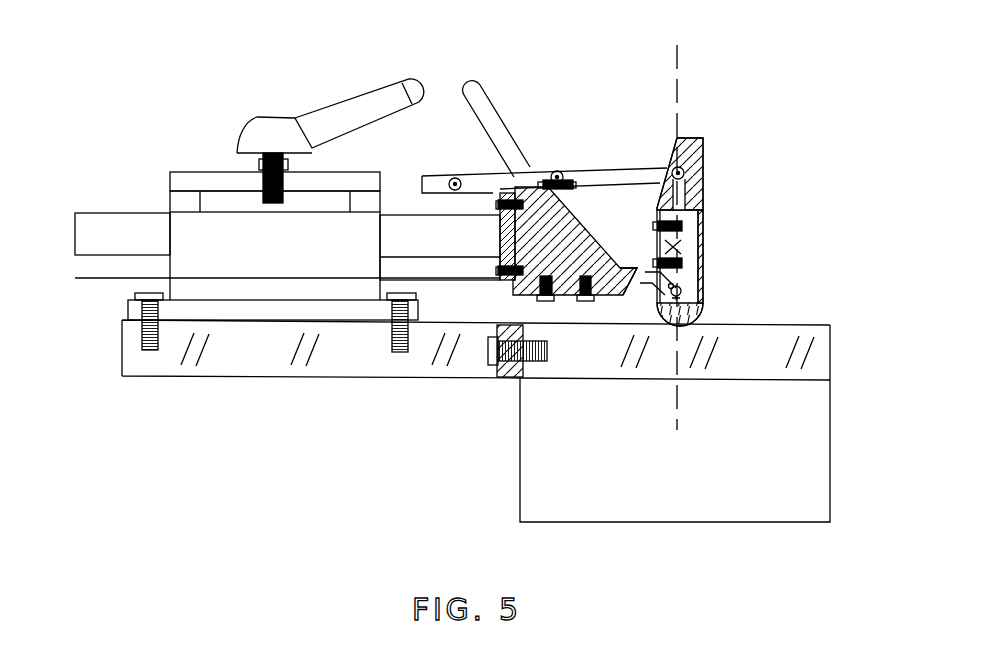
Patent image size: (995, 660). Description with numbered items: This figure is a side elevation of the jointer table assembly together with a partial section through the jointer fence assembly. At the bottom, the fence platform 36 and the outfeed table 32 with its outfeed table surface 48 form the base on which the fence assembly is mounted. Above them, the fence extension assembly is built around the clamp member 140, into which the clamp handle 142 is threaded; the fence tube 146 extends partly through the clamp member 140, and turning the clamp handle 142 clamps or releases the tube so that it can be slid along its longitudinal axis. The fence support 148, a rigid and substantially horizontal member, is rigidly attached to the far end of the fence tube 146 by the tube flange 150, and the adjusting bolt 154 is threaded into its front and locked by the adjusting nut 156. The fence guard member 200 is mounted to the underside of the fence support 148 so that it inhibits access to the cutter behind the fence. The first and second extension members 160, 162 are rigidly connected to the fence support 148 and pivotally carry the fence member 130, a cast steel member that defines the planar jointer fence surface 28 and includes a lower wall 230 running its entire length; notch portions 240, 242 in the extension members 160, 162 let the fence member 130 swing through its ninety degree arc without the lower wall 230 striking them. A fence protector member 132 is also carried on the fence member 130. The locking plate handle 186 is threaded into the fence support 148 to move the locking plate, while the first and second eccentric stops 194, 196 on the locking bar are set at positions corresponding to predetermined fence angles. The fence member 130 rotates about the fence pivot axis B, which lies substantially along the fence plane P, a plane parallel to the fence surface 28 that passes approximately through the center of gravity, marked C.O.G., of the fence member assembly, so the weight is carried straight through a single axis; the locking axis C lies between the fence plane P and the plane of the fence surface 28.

The clamp handle 142 is at (386, 87).
The fence tube 146 is at (111, 216).
The clamp member 140 is at (384, 171).
The first eccentric stop 194 is at (455, 173).
The locking plate handle 186 is at (494, 101).
The adjusting nut 156 is at (553, 170).
The second eccentric stop 196 is at (558, 172).
The adjusting bolt 154 is at (576, 179).
The tube flange 150 is at (497, 240).
The fence support 148 is at (566, 250).
The notch portion 240 is at (643, 282).
The notch portion 242 is at (628, 281).
The first extension member 160 is at (594, 300).
The second extension member 162 is at (585, 288).
The fence guard member 200 is at (421, 283).
The fence platform 36 is at (343, 369).
The outfeed table surface 48 is at (771, 323).
The outfeed table 32 is at (823, 327).
The fence member 130 is at (706, 172).
The jointer fence surface 28 is at (714, 192).
The lower wall 230 is at (716, 302).
The fence protector member 132 is at (675, 326).
The fence plane P is at (683, 62).
The locking axis C is at (688, 165).
The fence pivot axis B is at (689, 285).
The center of gravity C.O.G. is at (683, 238).